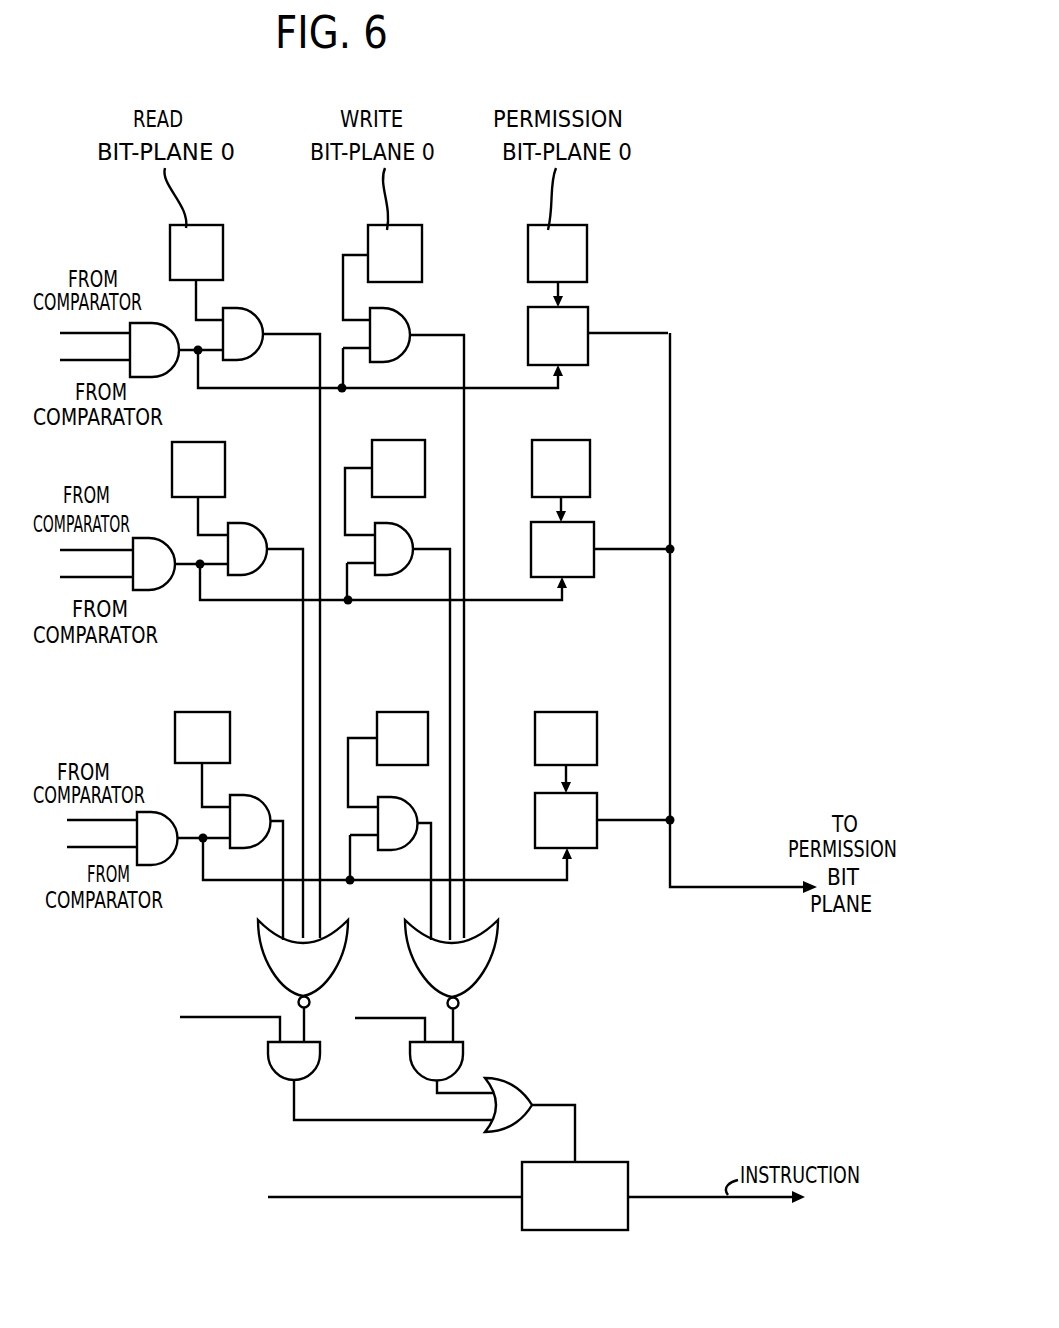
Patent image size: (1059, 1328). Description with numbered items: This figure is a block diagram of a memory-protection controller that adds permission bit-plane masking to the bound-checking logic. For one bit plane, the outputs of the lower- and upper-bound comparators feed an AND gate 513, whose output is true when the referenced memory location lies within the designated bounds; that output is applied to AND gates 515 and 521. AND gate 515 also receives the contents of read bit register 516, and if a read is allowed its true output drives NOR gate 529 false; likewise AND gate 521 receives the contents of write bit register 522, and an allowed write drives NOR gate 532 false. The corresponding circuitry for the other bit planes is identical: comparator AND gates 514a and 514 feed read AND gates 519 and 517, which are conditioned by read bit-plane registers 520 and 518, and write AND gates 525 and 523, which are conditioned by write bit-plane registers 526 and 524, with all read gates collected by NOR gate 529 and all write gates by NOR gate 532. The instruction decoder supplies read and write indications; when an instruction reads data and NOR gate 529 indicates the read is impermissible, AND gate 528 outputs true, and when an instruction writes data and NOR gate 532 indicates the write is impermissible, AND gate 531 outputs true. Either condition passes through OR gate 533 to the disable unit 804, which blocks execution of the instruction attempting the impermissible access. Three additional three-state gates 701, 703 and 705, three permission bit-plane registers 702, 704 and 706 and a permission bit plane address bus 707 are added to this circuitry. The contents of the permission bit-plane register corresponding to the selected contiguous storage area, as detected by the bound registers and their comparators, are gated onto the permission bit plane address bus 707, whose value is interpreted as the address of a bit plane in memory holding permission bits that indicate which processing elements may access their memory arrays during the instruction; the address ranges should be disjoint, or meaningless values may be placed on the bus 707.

The AND gate 513 is at (148, 818).
The AND gate (comparator inputs, plane 1) 514 is at (148, 545).
The AND gate (comparator inputs, plane 0) 514a is at (145, 330).
The AND gate 515 is at (250, 806).
The read bit register 516 is at (215, 716).
The AND gate (read bit-plane 1) 517 is at (245, 535).
The read bit-plane 1 register RB1 518 is at (200, 445).
The AND gate (read bit-plane 0) 519 is at (245, 318).
The read bit-plane 0 register RBO 520 is at (203, 228).
The AND gate 521 is at (400, 812).
The write bit register 522 is at (400, 715).
The AND gate (write bit-plane 1) 523 is at (395, 540).
The write bit-plane 1 register WB1 524 is at (390, 445).
The AND gate (write bit-plane 0) 525 is at (400, 325).
The write bit-plane 0 register WBO 526 is at (402, 230).
The AND gate 528 is at (282, 1063).
The NOR gate 529 is at (268, 948).
The AND gate 531 is at (450, 1060).
The NOR gate 532 is at (486, 962).
The OR gate 533 is at (515, 1097).
The three-state gate 701 is at (590, 850).
The permission bit-plane register 702 is at (565, 716).
The three-state gate 703 is at (580, 577).
The permission bit-plane register 704 is at (560, 452).
The three-state gate 705 is at (590, 322).
The permission bit-plane register 706 is at (575, 230).
The permission bit plane address bus 707 is at (705, 889).
The disable unit 804 is at (627, 1173).